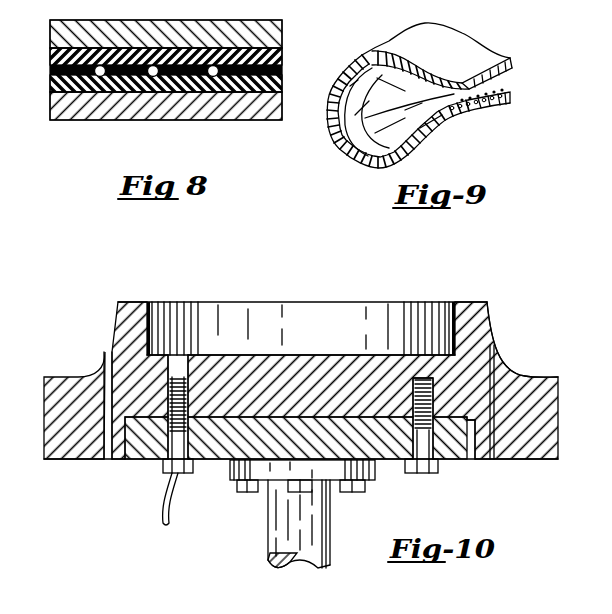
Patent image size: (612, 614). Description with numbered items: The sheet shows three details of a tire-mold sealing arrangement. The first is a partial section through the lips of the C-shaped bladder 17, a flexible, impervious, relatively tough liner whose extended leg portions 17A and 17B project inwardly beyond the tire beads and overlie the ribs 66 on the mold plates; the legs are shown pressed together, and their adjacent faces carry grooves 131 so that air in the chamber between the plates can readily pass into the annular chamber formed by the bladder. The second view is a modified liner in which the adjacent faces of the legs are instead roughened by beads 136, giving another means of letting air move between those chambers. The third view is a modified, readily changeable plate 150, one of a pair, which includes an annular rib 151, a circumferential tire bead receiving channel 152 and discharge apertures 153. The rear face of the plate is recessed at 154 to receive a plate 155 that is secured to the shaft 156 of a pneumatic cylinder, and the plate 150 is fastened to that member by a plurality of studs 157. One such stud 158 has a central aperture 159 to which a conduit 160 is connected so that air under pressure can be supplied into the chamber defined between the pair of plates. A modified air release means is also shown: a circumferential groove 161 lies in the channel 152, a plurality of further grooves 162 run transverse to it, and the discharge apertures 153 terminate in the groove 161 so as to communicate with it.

In FIG. 8, the ribs 66 is at (276, 38).
In FIG. 8, the extended leg portion 17A is at (280, 59).
In FIG. 8, the extended leg portion 17B is at (280, 84).
In FIG. 8, the grooves 131 is at (100, 76).
In FIG. 9, the bladder 17 is at (466, 47).
In FIG. 9, the beads 136 is at (499, 87).
In FIG. 10, the plate 150 is at (483, 327).
In FIG. 10, the annular rib 151 is at (131, 293).
In FIG. 10, the circumferential channel 152 is at (88, 372).
In FIG. 10, the discharge apertures 153 is at (108, 351).
In FIG. 10, the recess 154 is at (467, 422).
In FIG. 10, the plate 155 is at (396, 450).
In FIG. 10, the shaft 156 is at (326, 503).
In FIG. 10, the studs 157 is at (434, 480).
In FIG. 10, the stud 158 is at (190, 466).
In FIG. 10, the central aperture 159 is at (164, 466).
In FIG. 10, the conduit 160 is at (178, 498).
In FIG. 10, the circumferential groove 161 is at (493, 345).
In FIG. 10, the further grooves 162 is at (499, 355).